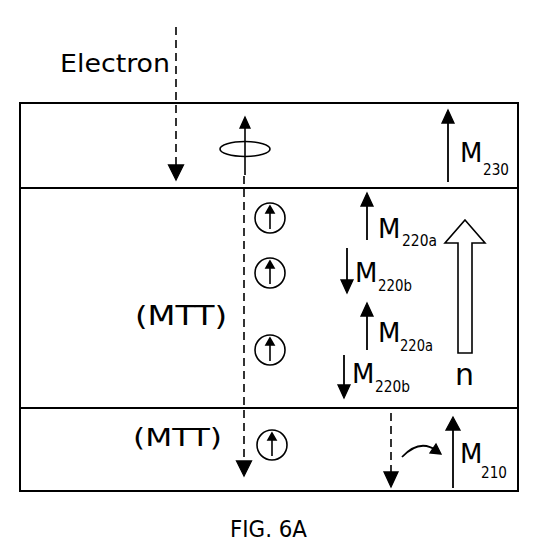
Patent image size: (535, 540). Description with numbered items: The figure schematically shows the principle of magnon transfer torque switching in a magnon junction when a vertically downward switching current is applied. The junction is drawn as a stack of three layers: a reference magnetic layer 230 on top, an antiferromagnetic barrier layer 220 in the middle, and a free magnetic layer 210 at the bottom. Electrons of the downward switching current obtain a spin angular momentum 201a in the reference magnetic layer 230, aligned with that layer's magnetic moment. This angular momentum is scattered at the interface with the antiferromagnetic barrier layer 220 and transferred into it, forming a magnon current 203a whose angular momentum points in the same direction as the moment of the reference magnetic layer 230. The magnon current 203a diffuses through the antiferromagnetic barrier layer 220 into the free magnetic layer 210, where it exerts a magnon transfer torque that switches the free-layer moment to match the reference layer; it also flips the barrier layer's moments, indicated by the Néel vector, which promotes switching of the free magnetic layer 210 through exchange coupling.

The reference magnetic layer 230 is at (269, 145).
The antiferromagnetic barrier layer 220 is at (269, 298).
The free magnetic layer 210 is at (269, 449).
The spin angular momentum 201a is at (270, 149).
The magnon current 203a is at (281, 345).